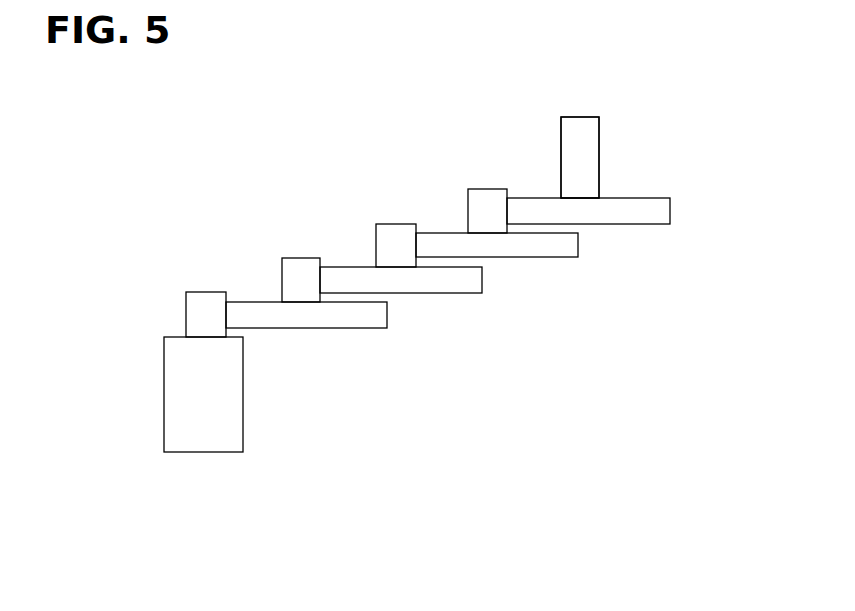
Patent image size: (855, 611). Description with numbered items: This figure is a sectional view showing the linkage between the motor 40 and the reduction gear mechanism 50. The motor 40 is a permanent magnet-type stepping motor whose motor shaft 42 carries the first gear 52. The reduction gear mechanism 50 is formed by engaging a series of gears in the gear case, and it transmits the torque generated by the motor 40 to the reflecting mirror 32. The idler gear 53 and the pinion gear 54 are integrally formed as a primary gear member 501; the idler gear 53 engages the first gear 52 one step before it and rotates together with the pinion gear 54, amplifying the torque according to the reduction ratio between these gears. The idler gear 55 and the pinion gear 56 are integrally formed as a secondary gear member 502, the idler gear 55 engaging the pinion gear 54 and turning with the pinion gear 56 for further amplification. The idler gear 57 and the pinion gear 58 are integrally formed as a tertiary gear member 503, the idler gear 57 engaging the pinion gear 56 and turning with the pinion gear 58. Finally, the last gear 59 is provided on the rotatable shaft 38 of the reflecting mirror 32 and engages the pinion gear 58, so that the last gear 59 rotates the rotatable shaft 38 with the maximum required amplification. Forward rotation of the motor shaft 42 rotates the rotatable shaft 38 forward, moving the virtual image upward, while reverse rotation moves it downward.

The motor 40 is at (156, 448).
The motor shaft 42 is at (202, 328).
The reduction gear mechanism 50 is at (676, 189).
The first gear 52 is at (218, 316).
The idler gear 53 is at (267, 317).
The pinion gear 54 is at (313, 285).
The idler gear 55 is at (343, 275).
The pinion gear 56 is at (392, 235).
The idler gear 57 is at (463, 245).
The pinion gear 58 is at (502, 212).
The last gear 59 is at (530, 207).
The primary gear member 501 is at (340, 418).
The secondary gear member 502 is at (397, 175).
The tertiary gear member 503 is at (562, 338).
The reflecting mirror 32 is at (590, 147).
The rotatable shaft 38 is at (580, 157).